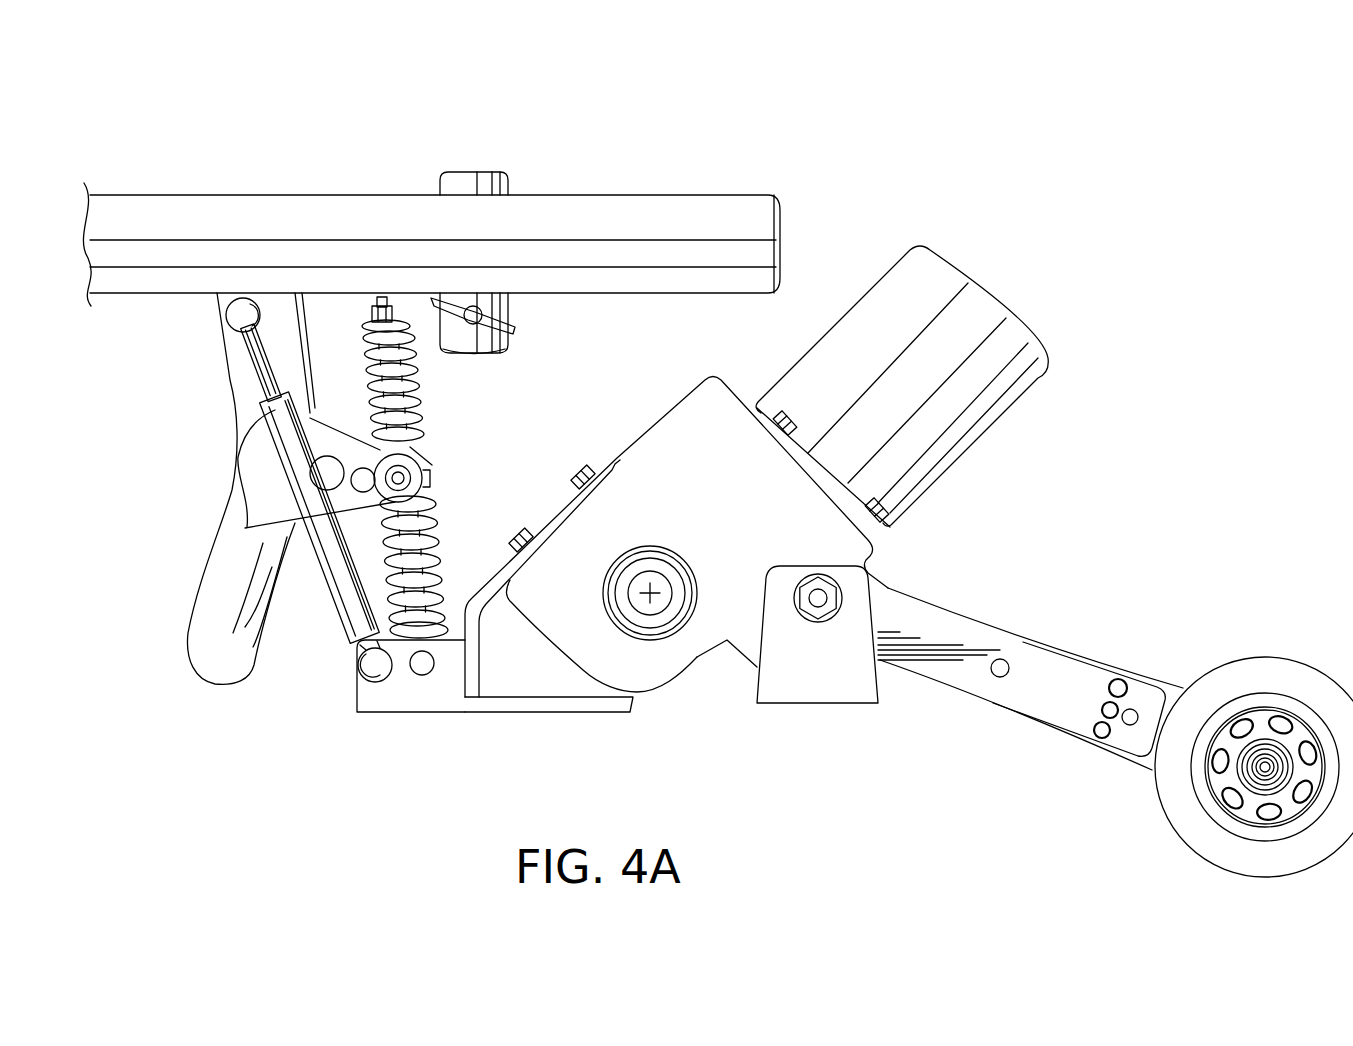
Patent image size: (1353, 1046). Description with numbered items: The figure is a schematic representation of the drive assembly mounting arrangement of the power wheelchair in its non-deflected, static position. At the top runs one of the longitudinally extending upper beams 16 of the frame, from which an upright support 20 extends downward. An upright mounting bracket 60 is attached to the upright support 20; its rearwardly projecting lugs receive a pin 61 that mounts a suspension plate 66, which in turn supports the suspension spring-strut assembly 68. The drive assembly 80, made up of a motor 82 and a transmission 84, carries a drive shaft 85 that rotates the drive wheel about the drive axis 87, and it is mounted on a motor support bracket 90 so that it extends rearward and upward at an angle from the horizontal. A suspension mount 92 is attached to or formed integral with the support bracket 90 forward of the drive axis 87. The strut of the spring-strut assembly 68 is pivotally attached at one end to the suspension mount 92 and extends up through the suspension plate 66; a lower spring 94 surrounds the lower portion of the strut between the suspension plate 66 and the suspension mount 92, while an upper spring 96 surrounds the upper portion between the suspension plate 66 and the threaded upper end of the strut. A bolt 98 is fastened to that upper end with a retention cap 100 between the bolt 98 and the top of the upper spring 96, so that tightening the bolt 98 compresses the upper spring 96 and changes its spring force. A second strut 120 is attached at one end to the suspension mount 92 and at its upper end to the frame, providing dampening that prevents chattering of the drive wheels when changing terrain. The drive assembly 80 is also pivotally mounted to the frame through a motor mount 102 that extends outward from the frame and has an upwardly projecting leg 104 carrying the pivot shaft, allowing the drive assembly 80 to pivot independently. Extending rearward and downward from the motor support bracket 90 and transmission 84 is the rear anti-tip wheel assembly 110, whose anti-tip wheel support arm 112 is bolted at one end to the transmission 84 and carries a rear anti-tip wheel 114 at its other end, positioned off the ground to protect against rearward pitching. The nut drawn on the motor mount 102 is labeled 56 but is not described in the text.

The upper beam 16 is at (268, 216).
The upright support 20 is at (223, 665).
The pivot nut 56 is at (822, 598).
The upright mounting bracket 60 is at (287, 440).
The pin 61 is at (432, 460).
The suspension plate 66 is at (432, 478).
The suspension spring-strut assembly 68 is at (452, 498).
The drive assembly 80 is at (1028, 446).
The motor 82 is at (973, 315).
The transmission 84 is at (653, 663).
The drive shaft 85 is at (663, 608).
The drive axis 87 is at (655, 585).
The motor support bracket 90 is at (512, 705).
The suspension mount 92 is at (380, 700).
The lower spring 94 is at (440, 568).
The upper spring 96 is at (363, 350).
The bolt 98 is at (372, 320).
The retention cap 100 is at (411, 328).
The motor mount 102 is at (817, 703).
The leg 104 is at (848, 682).
The rear anti-tip wheel assembly 110 is at (1114, 786).
The anti-tip wheel support arm 112 is at (1050, 698).
The rear anti-tip wheel 114 is at (1257, 658).
The second strut 120 is at (272, 410).